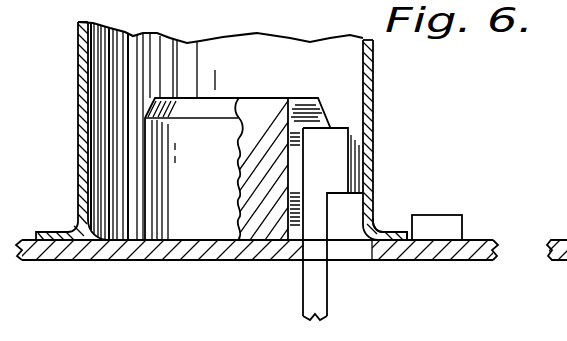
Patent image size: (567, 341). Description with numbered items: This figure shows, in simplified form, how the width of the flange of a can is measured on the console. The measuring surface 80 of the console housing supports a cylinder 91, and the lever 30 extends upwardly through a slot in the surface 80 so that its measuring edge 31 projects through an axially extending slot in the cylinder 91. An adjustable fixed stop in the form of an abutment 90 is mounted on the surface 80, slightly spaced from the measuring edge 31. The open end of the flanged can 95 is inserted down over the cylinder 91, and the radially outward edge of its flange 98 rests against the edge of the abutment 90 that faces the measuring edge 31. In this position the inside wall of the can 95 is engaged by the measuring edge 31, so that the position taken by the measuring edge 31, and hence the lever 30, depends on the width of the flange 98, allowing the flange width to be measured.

The can 95 is at (258, 131).
The cylinder 91 is at (203, 132).
The measuring edge 31 is at (378, 148).
The flange 98 is at (381, 221).
The abutment 90 is at (452, 215).
The measuring surface 80 is at (83, 258).
The lever 30 is at (322, 293).